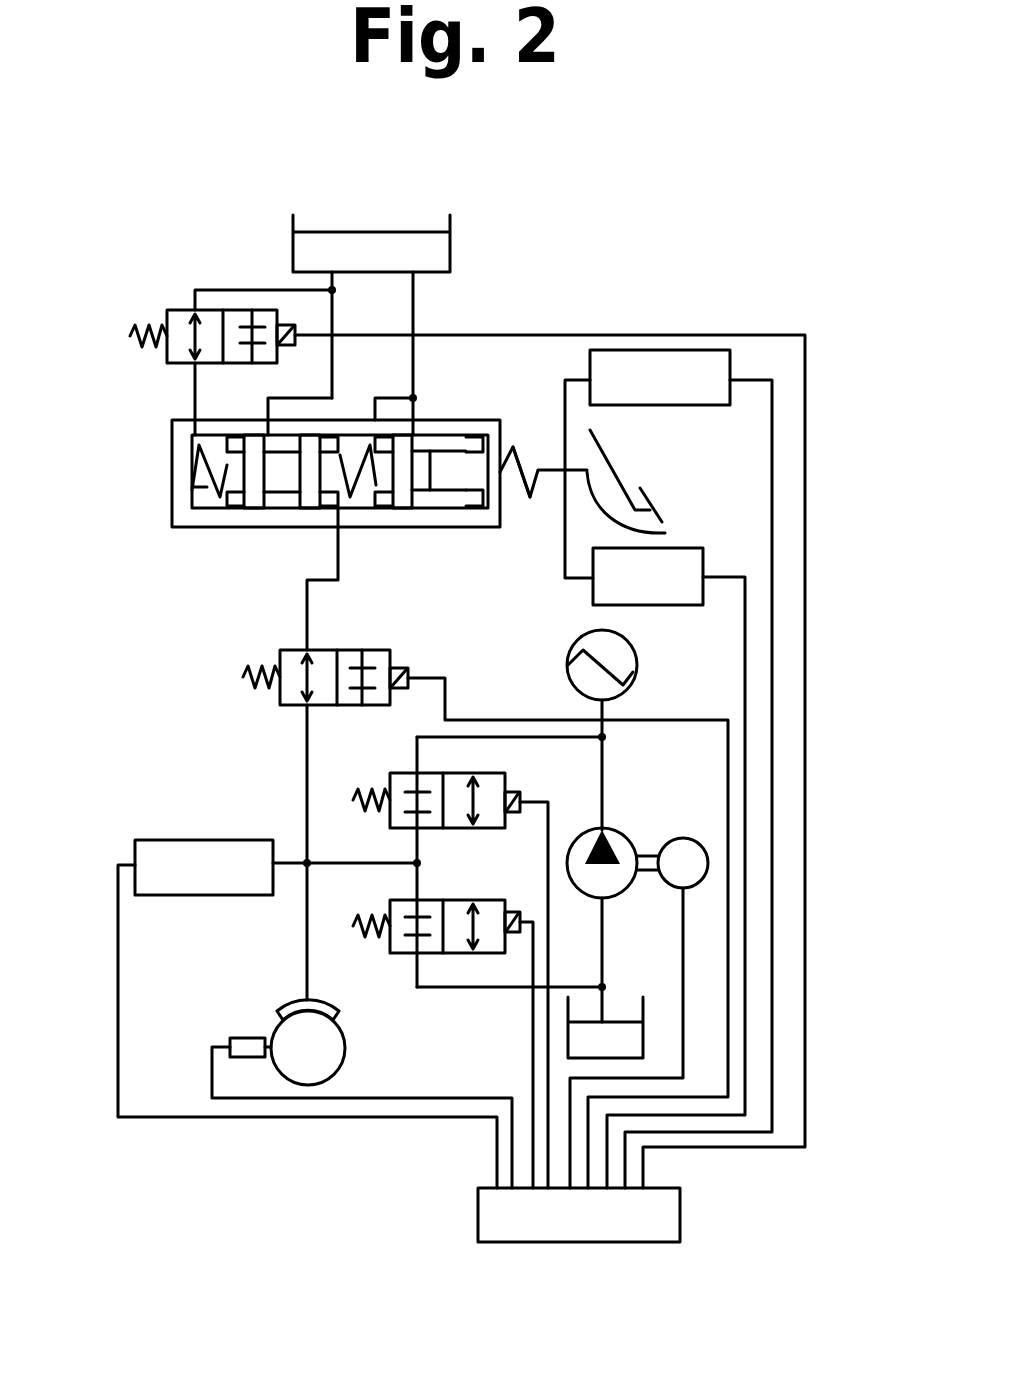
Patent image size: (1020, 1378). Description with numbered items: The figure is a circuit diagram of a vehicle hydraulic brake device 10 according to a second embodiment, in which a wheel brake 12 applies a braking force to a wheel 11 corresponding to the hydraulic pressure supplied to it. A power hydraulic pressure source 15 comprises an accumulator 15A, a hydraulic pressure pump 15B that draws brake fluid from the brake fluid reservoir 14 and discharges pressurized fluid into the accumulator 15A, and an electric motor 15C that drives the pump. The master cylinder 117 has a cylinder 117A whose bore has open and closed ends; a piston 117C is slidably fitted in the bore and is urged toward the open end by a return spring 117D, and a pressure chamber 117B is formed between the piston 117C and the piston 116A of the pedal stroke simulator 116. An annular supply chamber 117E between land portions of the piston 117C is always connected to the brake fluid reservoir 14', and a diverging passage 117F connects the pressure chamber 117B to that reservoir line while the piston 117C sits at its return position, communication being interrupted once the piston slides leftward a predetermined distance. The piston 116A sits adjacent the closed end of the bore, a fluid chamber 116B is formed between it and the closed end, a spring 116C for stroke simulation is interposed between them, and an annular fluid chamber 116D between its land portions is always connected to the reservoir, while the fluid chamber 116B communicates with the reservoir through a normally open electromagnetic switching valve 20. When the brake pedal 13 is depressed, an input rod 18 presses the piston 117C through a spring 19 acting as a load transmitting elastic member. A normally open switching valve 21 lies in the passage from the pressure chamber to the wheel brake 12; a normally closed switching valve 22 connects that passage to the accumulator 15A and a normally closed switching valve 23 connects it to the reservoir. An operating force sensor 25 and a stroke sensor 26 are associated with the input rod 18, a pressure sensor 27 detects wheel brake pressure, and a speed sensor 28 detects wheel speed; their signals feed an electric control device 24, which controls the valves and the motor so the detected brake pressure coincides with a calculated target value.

The vehicle hydraulic brake device 10 is at (603, 232).
The wheel 11 is at (348, 1040).
The wheel brake 12 is at (300, 1003).
The brake pedal 13 is at (623, 480).
The brake fluid reservoir 14 is at (725, 1027).
The brake fluid reservoir 14' is at (416, 284).
The power hydraulic pressure source 15 is at (628, 706).
The accumulator 15A is at (635, 650).
The hydraulic pressure pump 15B is at (628, 830).
The electric motor 15C is at (708, 863).
The input rod 18 is at (665, 533).
The spring 19 is at (520, 450).
The electromagnetic switching valve 20 is at (182, 308).
The electromagnetic switching valve 21 is at (278, 705).
The electromagnetic switching valve 22 is at (505, 780).
The electromagnetic switching valve 23 is at (482, 898).
The electric control device 24 is at (680, 1216).
The operating force sensor 25 is at (713, 360).
The stroke sensor 26 is at (703, 560).
The pressure sensor 27 is at (172, 840).
The speed sensor 28 is at (247, 1038).
The pedal stroke simulator 116 is at (170, 423).
The piston 116A is at (252, 508).
The fluid chamber 116B is at (203, 488).
The spring 116C is at (203, 457).
The annular fluid chamber 116D is at (282, 508).
The master cylinder 117 is at (445, 537).
The cylinder 117A is at (490, 440).
The pressure chamber 117B is at (368, 508).
The piston 117C is at (502, 505).
The return spring 117D is at (365, 508).
The supply chamber 117E is at (437, 445).
The diverging passage 117F is at (385, 440).